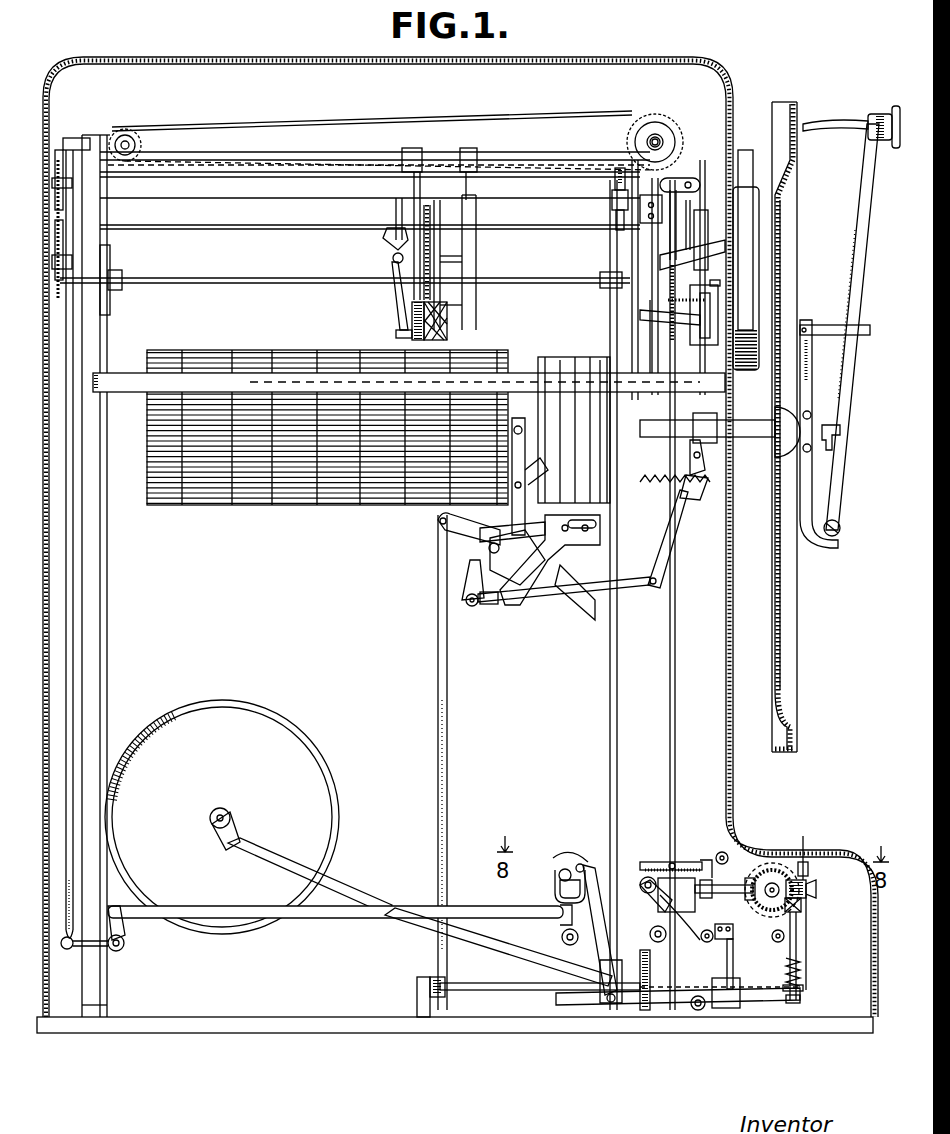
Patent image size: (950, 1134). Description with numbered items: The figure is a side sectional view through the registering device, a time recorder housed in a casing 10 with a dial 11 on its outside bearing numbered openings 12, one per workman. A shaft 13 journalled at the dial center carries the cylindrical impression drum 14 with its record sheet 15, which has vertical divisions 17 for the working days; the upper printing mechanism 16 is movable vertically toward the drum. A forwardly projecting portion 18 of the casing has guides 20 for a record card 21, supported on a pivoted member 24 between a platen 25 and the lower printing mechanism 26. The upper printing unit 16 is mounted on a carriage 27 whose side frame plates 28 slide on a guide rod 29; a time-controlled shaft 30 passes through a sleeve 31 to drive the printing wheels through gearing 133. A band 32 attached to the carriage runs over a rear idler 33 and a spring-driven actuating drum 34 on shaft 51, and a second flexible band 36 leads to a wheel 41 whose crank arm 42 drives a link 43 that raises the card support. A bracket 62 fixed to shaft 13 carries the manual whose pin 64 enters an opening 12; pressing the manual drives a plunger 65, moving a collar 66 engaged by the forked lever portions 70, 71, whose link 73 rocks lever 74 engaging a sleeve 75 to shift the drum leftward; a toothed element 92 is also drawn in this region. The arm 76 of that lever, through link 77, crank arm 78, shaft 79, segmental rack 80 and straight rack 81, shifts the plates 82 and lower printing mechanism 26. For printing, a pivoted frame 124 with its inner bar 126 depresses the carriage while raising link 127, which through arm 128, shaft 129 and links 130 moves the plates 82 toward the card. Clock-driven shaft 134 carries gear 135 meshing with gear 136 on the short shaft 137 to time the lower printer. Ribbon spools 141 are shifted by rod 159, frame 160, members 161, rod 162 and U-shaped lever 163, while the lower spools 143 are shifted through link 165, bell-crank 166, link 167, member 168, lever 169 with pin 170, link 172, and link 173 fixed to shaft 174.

The casing 10 is at (278, 60).
The dial 11 is at (786, 622).
The openings 12 is at (783, 135).
The shaft 13 is at (752, 428).
The impression drum 14 is at (151, 498).
The record sheet 15 is at (500, 356).
The printing mechanism 16 is at (450, 334).
The vertical divisions 17 is at (320, 357).
The portion of the casing 18 is at (840, 850).
The guides 20 is at (808, 862).
The record card 21 is at (806, 940).
The pivoted member 24 is at (800, 986).
The platen 25 is at (817, 890).
The printing mechanism 26 is at (772, 874).
The carriage 27 is at (478, 250).
The side frame plates 28 is at (413, 158).
The guide rod 29 is at (505, 162).
The time-controlled shaft 30 is at (170, 283).
The sleeve 31 is at (455, 282).
The band 32 is at (290, 128).
The idler 33 is at (131, 140).
The spring-driven actuating drum 34 is at (664, 138).
The second flexible band 36 is at (115, 352).
The wheel 41 is at (222, 716).
The crank arm 42 is at (233, 838).
The link 43 is at (342, 884).
The shaft 51 is at (653, 138).
The bracket 62 is at (812, 333).
The pin 64 is at (830, 124).
The plunger 65 is at (830, 436).
The collar 66 is at (705, 414).
The lever portion 70 is at (690, 476).
The lever portion 71 is at (668, 554).
The link 73 is at (545, 599).
The lever 74 is at (475, 606).
The sleeve 75 is at (560, 446).
The arm 76 is at (460, 517).
The link 77 is at (445, 563).
The crank arm 78 is at (442, 1000).
The shaft 79 is at (470, 986).
The segmental rack 80 is at (732, 940).
The straight rack 81 is at (727, 946).
The plates 82 is at (724, 902).
The ratchet 92 is at (656, 484).
The frame 124 is at (618, 190).
The inner bar 126 is at (332, 184).
The link 127 is at (612, 708).
The arm 128 is at (571, 930).
The shaft 129 is at (665, 940).
The links 130 is at (678, 876).
The gearing 133 is at (425, 300).
The shaft 134 is at (675, 680).
The gear 135 is at (653, 858).
The gear 136 is at (706, 870).
The short shaft 137 is at (728, 880).
The spools 141 is at (413, 328).
The spools 143 is at (800, 902).
The rod 159 is at (224, 230).
The frame 160 is at (383, 240).
The members 161 is at (395, 220).
The rod 162 is at (392, 262).
The U-shaped lever 163 is at (424, 276).
The link 165 is at (68, 598).
The bell-crank 166 is at (119, 951).
The link 167 is at (358, 918).
The member 168 is at (560, 908).
The lever 169 is at (563, 868).
The pin 170 is at (590, 862).
The link 172 is at (598, 984).
The link 173 is at (672, 1004).
The shaft 174 is at (702, 1008).